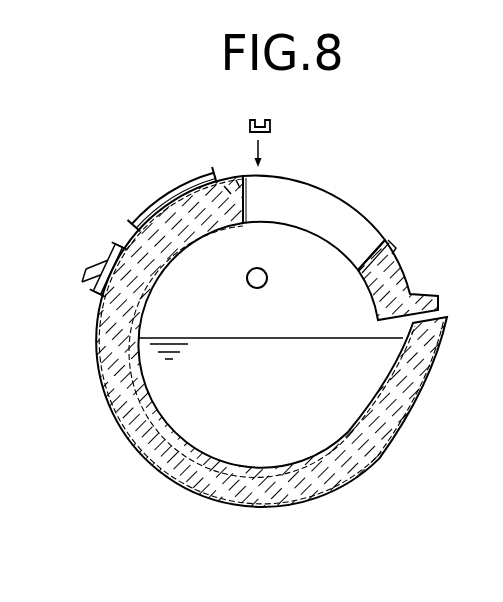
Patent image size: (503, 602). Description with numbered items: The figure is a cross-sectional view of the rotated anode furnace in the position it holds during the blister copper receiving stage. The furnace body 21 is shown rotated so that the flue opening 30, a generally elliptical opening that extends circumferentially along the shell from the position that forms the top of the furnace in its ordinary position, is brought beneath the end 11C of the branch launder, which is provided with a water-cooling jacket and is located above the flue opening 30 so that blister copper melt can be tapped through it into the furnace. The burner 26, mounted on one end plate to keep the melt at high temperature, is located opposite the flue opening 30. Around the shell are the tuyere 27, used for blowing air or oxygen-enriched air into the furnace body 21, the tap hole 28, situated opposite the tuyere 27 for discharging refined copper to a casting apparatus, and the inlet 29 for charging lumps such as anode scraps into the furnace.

The furnace body 21 is at (378, 473).
The burner 26 is at (276, 261).
The tuyere 27 is at (84, 265).
The tap hole 28 is at (440, 312).
The inlet 29 is at (170, 198).
The flue opening 30 is at (363, 233).
The end of branch launder 11C is at (272, 125).